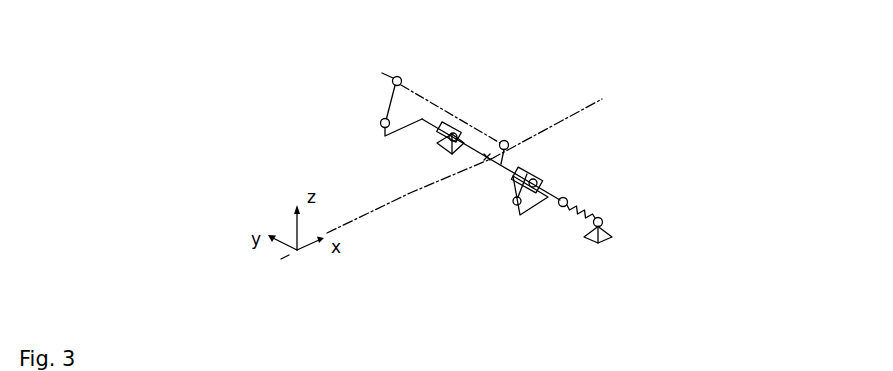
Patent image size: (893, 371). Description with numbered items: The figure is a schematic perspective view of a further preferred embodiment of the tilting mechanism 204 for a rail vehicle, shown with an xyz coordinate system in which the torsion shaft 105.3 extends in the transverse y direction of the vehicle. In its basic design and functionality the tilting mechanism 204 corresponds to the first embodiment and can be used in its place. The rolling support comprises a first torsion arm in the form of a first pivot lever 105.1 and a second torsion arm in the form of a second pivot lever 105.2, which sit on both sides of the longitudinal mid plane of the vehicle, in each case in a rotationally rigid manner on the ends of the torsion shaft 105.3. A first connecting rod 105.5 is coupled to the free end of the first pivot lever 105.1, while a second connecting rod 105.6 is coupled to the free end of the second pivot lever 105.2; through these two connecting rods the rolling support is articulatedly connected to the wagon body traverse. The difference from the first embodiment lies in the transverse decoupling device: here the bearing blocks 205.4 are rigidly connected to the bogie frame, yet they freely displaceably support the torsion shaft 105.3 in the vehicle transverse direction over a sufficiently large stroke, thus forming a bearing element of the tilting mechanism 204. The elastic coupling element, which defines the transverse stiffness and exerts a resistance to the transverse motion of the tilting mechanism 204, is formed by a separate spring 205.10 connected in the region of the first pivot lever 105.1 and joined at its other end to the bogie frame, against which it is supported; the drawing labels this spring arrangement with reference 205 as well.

The tilting mechanism 204 is at (580, 88).
The second connecting rod 105.6 is at (388, 100).
The second pivot lever 105.2 is at (408, 121).
The first connecting rod 105.5 is at (503, 160).
The torsion shaft 105.3 is at (482, 147).
The bearing blocks 205.4 is at (452, 126).
The first pivot lever 105.1 is at (535, 208).
The spring element 205 is at (595, 190).
The spring 205.10 is at (592, 212).